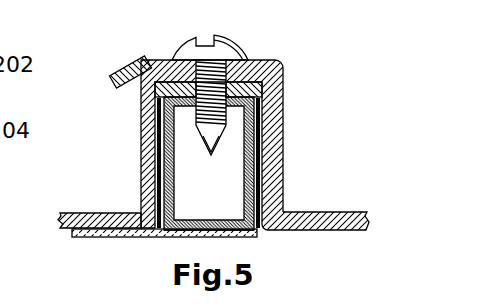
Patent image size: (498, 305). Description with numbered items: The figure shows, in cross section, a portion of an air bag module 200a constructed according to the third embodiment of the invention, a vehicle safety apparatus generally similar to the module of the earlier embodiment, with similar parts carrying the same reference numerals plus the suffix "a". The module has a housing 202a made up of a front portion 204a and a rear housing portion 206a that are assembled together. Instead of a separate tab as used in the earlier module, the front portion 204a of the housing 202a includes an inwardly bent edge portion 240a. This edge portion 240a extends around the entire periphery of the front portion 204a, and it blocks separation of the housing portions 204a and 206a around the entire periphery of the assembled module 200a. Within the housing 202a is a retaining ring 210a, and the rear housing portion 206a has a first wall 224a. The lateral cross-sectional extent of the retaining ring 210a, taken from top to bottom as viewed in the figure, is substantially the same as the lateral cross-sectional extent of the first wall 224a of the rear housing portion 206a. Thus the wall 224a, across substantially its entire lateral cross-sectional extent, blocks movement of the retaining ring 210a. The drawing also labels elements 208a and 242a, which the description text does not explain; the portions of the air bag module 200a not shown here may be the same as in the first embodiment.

The air bag module 200a is at (322, 89).
The housing 202a is at (296, 133).
The front portion 204a is at (312, 212).
The rear housing portion 206a is at (87, 206).
The adhesive layer 208a is at (130, 240).
The retaining ring 210a is at (248, 232).
The first wall 224a is at (146, 165).
The edge portion 240a is at (127, 93).
The screw 242a is at (197, 37).